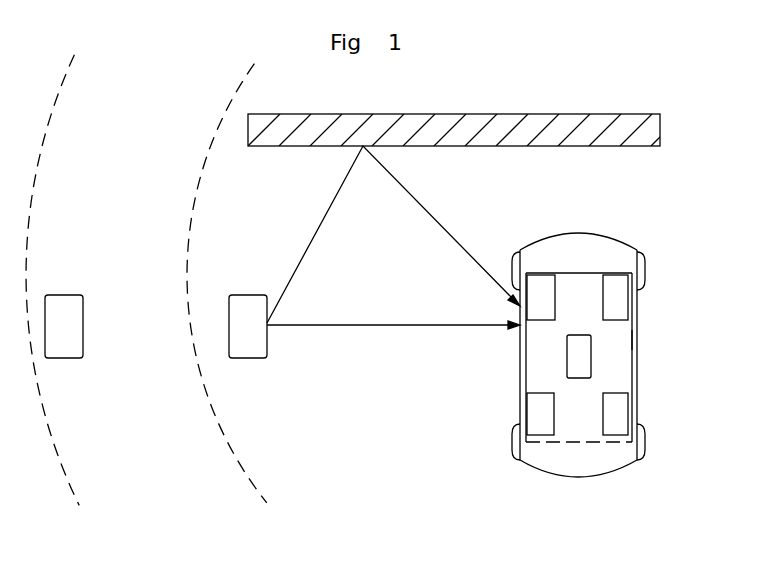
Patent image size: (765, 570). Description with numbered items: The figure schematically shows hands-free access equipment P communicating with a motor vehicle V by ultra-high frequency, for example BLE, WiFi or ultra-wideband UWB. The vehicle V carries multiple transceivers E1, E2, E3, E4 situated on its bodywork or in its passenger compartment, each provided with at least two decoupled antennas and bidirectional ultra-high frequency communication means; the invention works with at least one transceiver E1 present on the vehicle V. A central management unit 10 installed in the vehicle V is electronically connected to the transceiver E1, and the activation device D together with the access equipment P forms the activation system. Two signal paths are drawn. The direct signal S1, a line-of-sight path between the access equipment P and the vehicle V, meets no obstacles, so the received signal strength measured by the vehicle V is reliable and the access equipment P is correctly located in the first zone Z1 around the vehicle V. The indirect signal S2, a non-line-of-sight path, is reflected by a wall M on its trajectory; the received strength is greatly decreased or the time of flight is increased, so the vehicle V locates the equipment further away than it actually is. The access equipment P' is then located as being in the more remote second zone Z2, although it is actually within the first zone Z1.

The wall M is at (590, 128).
The vehicle V is at (605, 250).
The transceiver E1 is at (538, 283).
The transceiver E2 is at (538, 428).
The transceiver E3 is at (618, 428).
The transceiver E4 is at (618, 283).
The activation device D is at (640, 340).
The central management unit 10 is at (580, 355).
The hands-free access equipment P is at (281, 349).
The access equipment P' is at (98, 348).
The direct signal S1 is at (393, 315).
The indirect signal S2 is at (393, 234).
The first zone Z1 is at (239, 283).
The second zone Z2 is at (64, 280).